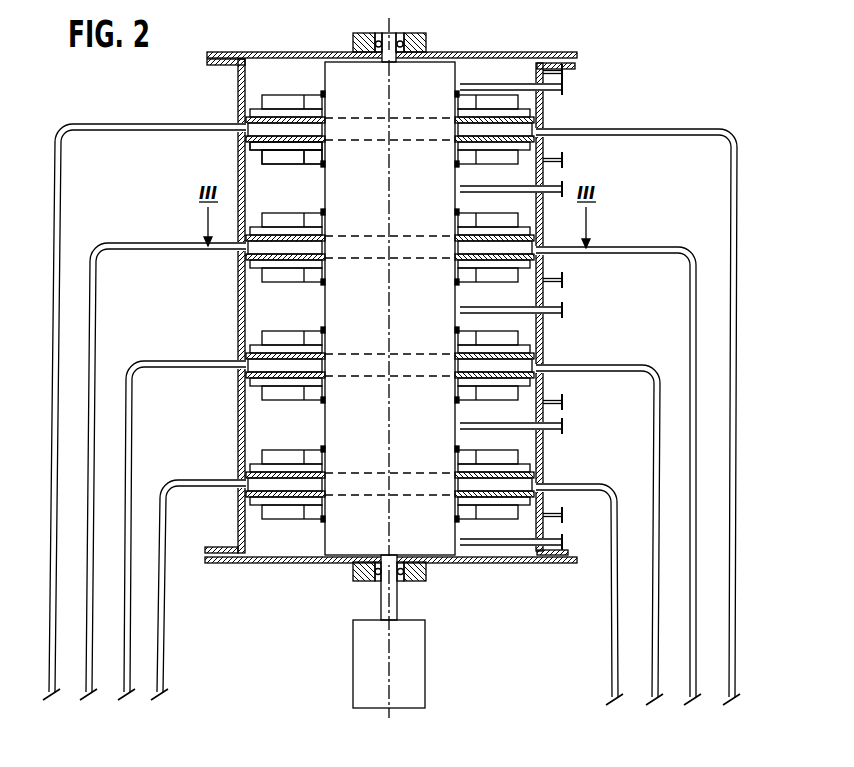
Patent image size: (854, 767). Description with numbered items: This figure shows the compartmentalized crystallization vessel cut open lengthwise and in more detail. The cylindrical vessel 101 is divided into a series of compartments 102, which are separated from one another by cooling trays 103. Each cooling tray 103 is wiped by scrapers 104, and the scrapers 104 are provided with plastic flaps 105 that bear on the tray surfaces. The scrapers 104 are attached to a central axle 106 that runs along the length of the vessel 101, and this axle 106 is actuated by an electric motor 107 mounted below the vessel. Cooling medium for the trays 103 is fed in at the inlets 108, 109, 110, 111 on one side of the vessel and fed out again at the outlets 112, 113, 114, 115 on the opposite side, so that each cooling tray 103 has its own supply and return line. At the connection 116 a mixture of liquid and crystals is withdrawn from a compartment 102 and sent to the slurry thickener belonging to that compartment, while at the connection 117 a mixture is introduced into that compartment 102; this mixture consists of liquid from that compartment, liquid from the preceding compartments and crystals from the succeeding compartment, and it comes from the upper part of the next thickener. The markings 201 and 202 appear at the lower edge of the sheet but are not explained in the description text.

The cylindrical vessel 101 is at (238, 90).
The compartment 102 is at (293, 80).
The cooling tray 103 is at (500, 130).
The scraper 104 is at (250, 163).
The plastic flap 105 is at (246, 143).
The axle 106 is at (350, 301).
The electric motor 107 is at (365, 663).
The cooling medium inlet 108 is at (62, 192).
The cooling medium inlet 109 is at (96, 302).
The cooling medium inlet 110 is at (132, 419).
The cooling medium inlet 111 is at (167, 529).
The cooling medium outlet 112 is at (730, 198).
The cooling medium outlet 113 is at (690, 306).
The cooling medium outlet 114 is at (654, 418).
The cooling medium outlet 115 is at (611, 532).
The slurry withdrawal point 116 is at (563, 160).
The mixture introduction point 117 is at (563, 187).
The reference element 201 is at (199, 762).
The reference element 202 is at (259, 762).